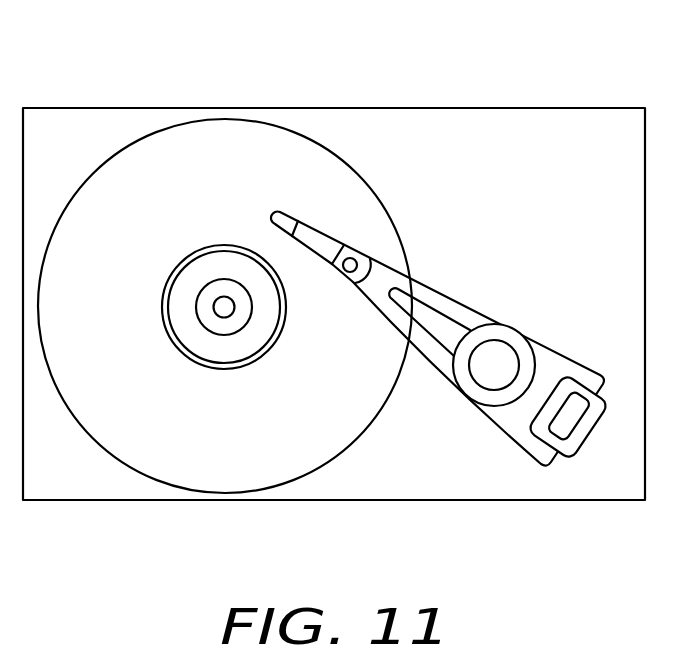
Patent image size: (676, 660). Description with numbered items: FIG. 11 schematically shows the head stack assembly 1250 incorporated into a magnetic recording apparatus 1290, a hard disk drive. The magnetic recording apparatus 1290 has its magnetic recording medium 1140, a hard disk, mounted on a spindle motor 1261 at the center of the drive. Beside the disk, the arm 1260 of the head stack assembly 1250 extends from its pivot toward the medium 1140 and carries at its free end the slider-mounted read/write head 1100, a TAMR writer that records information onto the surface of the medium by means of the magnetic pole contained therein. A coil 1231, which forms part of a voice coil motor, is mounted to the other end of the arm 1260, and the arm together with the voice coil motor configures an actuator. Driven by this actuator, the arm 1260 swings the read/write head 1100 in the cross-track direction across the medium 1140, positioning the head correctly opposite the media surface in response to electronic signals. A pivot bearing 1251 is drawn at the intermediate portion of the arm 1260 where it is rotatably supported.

The magnetic recording apparatus 1290 is at (365, 102).
The read/write head 1100 is at (288, 211).
The medium 1140 is at (155, 483).
The spindle motor 1261 is at (224, 318).
The pivot bearing 1251 is at (505, 323).
The arm 1260 is at (433, 362).
The head stack assembly 1250 is at (500, 427).
The coil 1231 is at (595, 432).